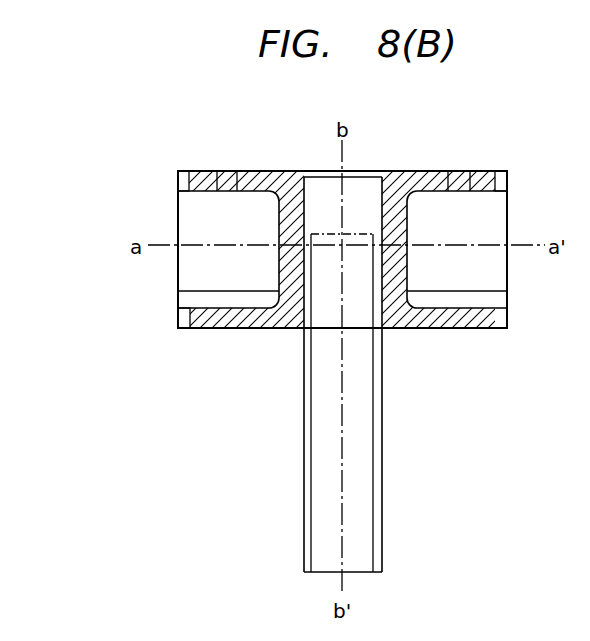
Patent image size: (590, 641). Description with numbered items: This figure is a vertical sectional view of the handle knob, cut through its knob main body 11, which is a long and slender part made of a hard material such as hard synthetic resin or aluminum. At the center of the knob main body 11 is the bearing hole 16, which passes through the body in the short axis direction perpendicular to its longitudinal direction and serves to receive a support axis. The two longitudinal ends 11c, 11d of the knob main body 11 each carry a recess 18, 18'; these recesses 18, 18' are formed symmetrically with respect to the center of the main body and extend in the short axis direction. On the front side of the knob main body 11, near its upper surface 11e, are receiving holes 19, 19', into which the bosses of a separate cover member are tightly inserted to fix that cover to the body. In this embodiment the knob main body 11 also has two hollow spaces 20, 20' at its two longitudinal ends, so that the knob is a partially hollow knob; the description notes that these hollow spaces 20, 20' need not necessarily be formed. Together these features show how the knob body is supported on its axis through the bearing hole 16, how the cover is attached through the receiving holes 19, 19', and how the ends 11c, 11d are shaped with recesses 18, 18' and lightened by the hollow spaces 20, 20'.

The knob main body 11 is at (489, 167).
The end of knob main body 11c is at (175, 312).
The end of knob main body 11d is at (513, 298).
The upper surface of body 11e is at (283, 171).
The bearing hole 16 is at (383, 188).
The recess 18 is at (154, 171).
The recess 18' is at (534, 166).
The receiving hole 19 is at (224, 154).
The receiving hole 19' is at (460, 154).
The hollow space 20 is at (247, 341).
The hollow space 20' is at (438, 341).